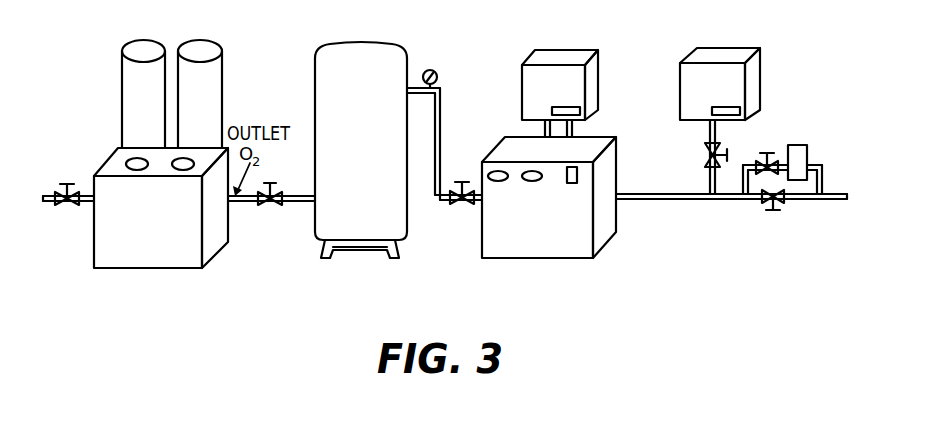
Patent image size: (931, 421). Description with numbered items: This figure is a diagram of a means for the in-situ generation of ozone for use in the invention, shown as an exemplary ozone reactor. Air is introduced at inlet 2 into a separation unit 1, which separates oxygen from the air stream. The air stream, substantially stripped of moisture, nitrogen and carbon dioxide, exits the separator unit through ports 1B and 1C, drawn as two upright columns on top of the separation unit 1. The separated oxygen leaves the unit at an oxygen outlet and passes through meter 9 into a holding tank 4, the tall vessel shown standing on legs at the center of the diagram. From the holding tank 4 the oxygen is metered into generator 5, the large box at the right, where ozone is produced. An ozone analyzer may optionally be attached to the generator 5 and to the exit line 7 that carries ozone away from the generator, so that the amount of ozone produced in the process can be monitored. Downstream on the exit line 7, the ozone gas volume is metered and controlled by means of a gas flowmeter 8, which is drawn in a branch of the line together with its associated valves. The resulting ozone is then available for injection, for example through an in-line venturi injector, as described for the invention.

The separation unit 1 is at (146, 272).
The port 1B is at (142, 40).
The port 1C is at (203, 40).
The inlet 2 is at (53, 197).
The holding tank 4 is at (313, 227).
The generator 5 is at (510, 260).
The exit line 7 is at (678, 202).
The gas flowmeter 8 is at (805, 145).
The meter 9 is at (280, 184).